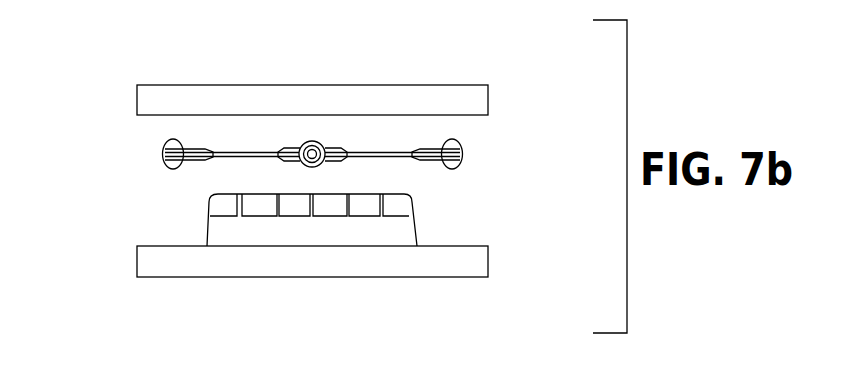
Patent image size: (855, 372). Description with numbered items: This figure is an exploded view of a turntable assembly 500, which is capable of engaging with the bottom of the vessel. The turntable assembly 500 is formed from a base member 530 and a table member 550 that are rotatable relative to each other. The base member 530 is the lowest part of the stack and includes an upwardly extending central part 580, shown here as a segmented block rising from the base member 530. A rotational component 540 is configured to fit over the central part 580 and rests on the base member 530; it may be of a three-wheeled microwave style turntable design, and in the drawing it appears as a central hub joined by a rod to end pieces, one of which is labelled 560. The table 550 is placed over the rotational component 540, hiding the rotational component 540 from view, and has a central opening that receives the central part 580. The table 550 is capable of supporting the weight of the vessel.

The turntable assembly 500 is at (82, 78).
The base member 530 is at (432, 277).
The rotational component 540 is at (461, 146).
The table member 550 is at (488, 85).
The bushing 560 is at (164, 144).
The central part 580 is at (205, 232).